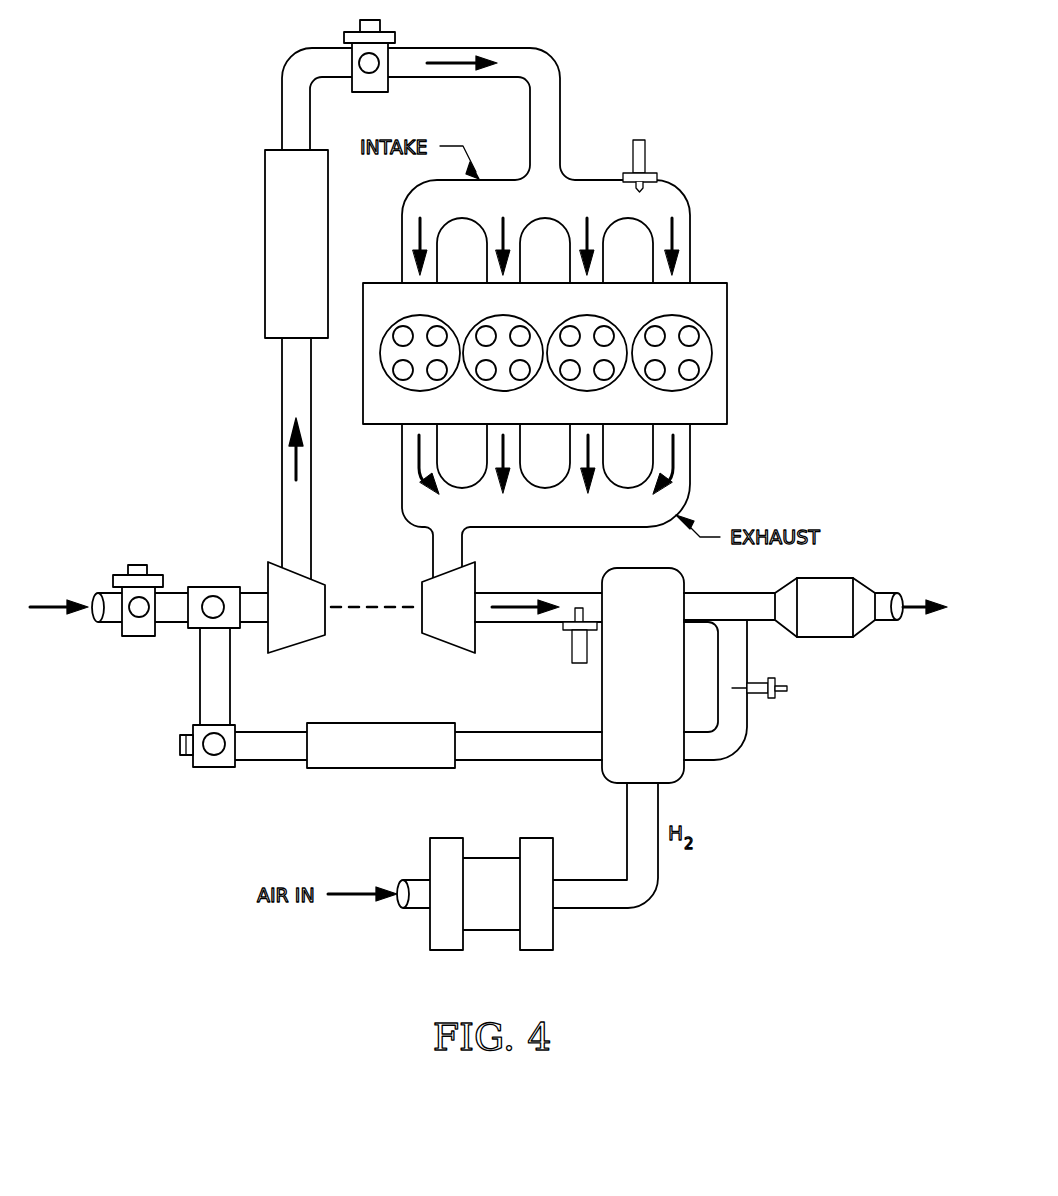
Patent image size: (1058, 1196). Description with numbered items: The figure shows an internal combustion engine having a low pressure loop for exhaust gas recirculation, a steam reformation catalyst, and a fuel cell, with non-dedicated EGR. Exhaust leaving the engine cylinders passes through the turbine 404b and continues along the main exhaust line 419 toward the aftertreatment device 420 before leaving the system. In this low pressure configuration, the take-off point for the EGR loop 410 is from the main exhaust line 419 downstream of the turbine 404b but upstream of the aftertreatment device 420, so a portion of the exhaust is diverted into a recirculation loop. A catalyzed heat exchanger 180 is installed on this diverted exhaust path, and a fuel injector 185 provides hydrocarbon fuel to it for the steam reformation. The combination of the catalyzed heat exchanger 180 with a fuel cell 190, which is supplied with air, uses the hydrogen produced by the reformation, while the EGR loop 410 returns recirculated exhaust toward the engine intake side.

The turbine 404b is at (447, 645).
The main exhaust line 419 is at (519, 624).
The catalyzed heat exchanger 180 is at (663, 692).
The fuel injector 185 is at (770, 700).
The aftertreatment device 420 is at (823, 638).
The EGR loop 410 is at (527, 762).
The fuel cell 190 is at (491, 932).